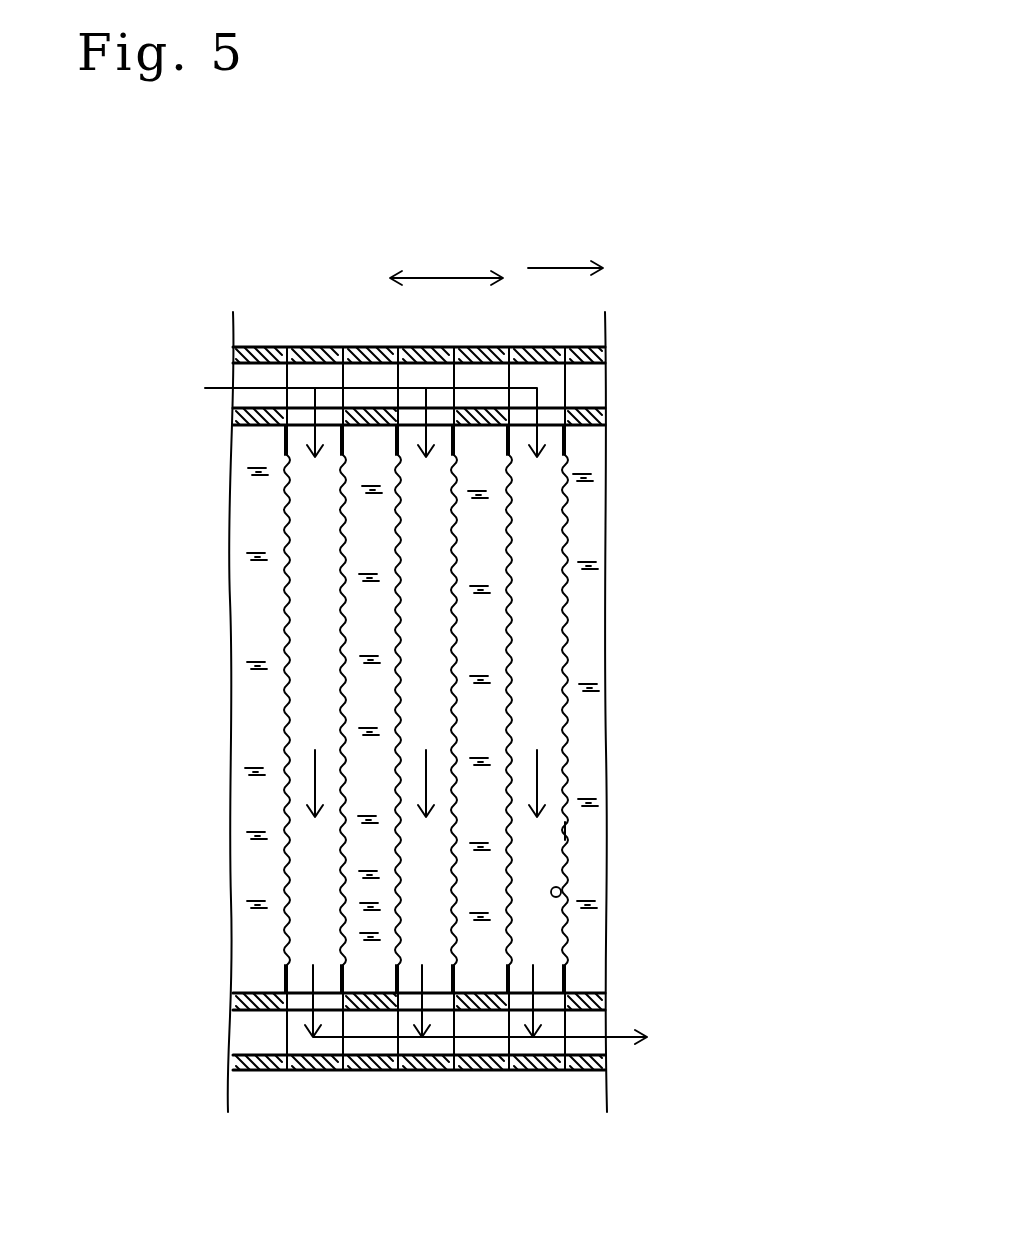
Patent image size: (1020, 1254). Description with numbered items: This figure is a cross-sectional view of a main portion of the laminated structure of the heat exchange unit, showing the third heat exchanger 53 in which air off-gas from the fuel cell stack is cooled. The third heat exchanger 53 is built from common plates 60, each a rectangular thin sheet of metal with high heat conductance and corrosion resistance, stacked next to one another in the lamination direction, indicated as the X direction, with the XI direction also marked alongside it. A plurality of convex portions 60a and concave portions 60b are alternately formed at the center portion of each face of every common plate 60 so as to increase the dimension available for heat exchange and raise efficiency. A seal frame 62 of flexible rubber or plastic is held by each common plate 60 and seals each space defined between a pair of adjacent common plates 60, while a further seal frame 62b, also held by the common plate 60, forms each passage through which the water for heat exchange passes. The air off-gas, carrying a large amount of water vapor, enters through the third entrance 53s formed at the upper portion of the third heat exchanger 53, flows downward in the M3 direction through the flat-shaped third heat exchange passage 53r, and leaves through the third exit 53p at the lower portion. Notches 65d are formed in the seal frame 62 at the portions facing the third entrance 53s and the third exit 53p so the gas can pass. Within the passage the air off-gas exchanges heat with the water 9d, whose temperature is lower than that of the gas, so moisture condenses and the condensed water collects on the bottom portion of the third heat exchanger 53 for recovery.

The third heat exchanger 53 is at (672, 367).
The third entrance 53s is at (400, 347).
The third heat exchange passage 53r is at (313, 602).
The third exit 53p is at (318, 1072).
The seal frame 62 is at (316, 347).
The seal frame 62b is at (265, 347).
The notches 65d is at (303, 415).
The common plate 60 is at (397, 697).
The convex portions 60a is at (563, 830).
The concave portions 60b is at (561, 893).
The water 9d is at (360, 843).
The M3 direction M3 is at (313, 787).
The X direction X is at (440, 278).
The flow direction XI is at (560, 268).